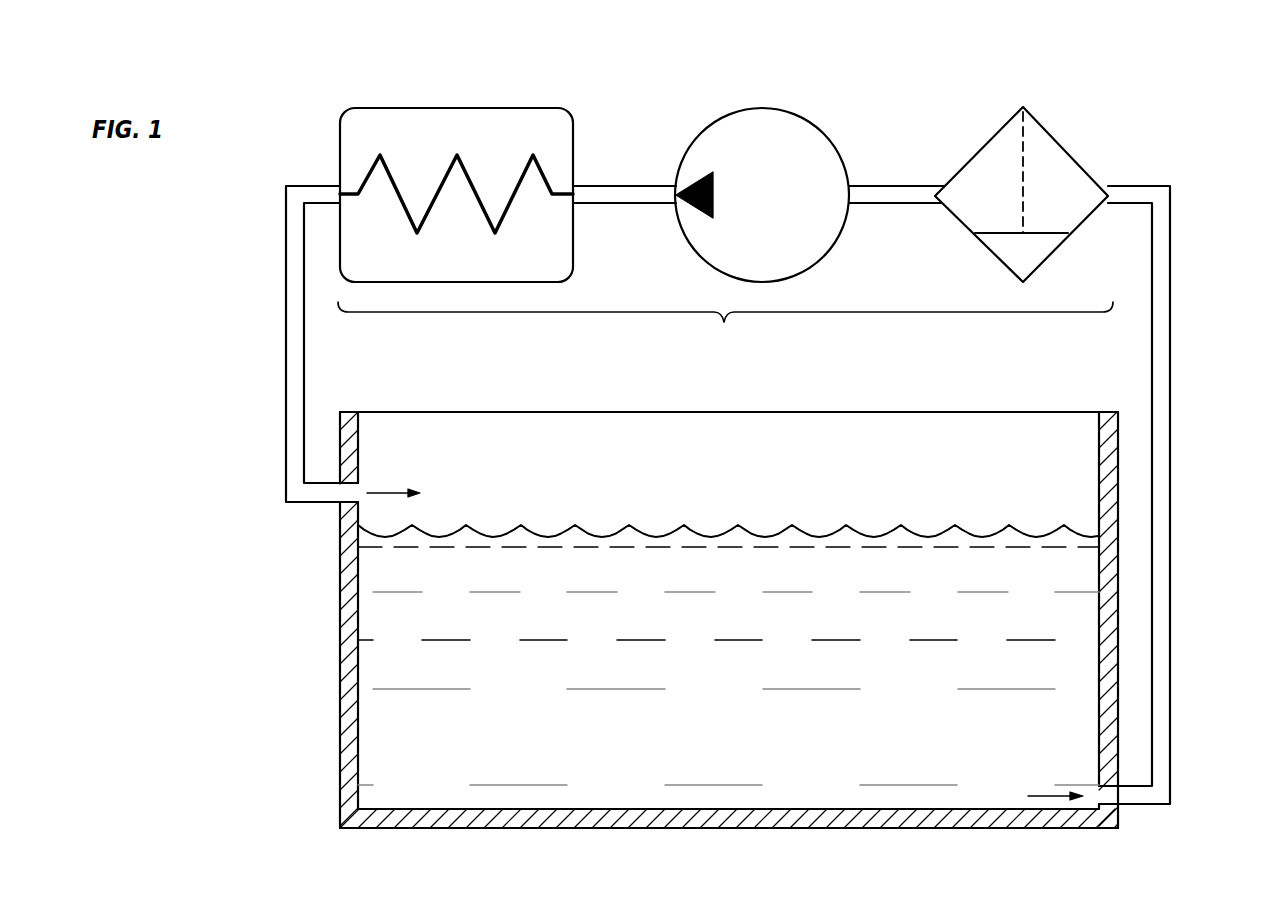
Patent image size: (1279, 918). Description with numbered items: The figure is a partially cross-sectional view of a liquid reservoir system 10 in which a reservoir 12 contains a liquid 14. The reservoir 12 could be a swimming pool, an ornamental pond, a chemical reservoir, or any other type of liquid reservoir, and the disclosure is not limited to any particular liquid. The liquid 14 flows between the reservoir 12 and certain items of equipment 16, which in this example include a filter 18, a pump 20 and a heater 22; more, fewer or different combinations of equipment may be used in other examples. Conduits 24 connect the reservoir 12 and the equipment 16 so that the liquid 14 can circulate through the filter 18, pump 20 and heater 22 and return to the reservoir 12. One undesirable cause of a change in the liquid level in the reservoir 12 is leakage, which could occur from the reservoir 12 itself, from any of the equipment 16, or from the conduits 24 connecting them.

The system 10 is at (1172, 77).
The reservoir 12 is at (1099, 442).
The liquid 14 is at (743, 527).
The equipment 16 is at (724, 322).
The filter 18 is at (1073, 153).
The pump 20 is at (768, 108).
The heater 22 is at (446, 108).
The conduits 24 is at (606, 184).